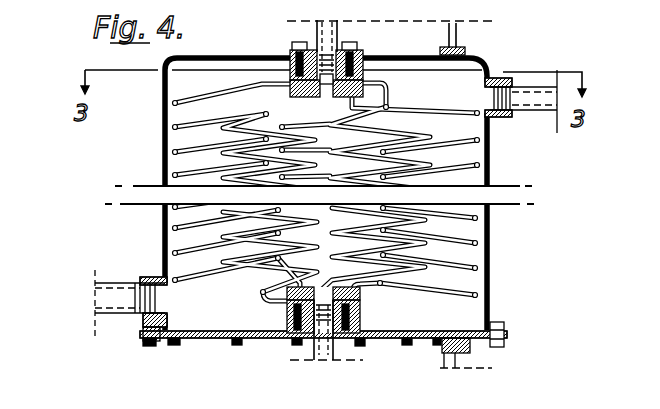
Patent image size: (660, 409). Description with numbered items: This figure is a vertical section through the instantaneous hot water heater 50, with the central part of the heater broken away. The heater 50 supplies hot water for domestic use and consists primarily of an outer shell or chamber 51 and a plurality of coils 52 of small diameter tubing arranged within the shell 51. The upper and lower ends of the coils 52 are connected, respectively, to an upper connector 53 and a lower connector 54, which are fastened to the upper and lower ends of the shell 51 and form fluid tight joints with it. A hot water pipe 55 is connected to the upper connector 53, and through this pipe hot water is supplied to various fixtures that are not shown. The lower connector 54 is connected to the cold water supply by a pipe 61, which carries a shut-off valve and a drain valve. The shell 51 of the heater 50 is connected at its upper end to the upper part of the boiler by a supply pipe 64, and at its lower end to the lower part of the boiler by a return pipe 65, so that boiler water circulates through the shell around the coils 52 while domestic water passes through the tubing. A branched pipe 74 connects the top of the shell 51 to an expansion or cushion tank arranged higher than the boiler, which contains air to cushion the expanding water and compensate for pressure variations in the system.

The instantaneous hot water heater 50 is at (95, 158).
The outer shell 51 is at (488, 248).
The coils 52 is at (285, 110).
The upper connector 53 is at (362, 53).
The lower connector 54 is at (287, 315).
The hot water pipe 55 is at (315, 32).
The pipe 61 is at (323, 357).
The supply pipe 64 is at (533, 110).
The return pipe 65 is at (107, 297).
The branched pipe 74 is at (456, 33).